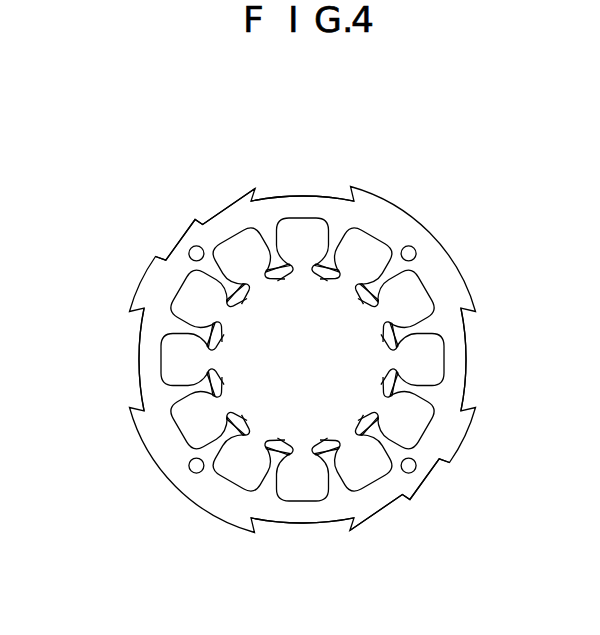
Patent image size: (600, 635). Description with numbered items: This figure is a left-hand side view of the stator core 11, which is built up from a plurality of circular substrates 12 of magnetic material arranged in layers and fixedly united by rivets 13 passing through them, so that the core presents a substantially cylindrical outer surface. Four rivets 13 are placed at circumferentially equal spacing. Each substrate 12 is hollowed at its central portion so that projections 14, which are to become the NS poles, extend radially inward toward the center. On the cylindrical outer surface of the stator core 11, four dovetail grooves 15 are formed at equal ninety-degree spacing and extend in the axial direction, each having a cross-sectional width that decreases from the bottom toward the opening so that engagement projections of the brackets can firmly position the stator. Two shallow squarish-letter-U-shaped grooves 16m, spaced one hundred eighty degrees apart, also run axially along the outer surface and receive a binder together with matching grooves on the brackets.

The stator core 11 is at (306, 365).
The circular substrate 12 is at (442, 267).
The rivet 13 is at (414, 247).
The projection 14 is at (353, 288).
The dovetail groove 15 is at (300, 188).
The squarish-letter-U-shaped groove 16m is at (183, 237).